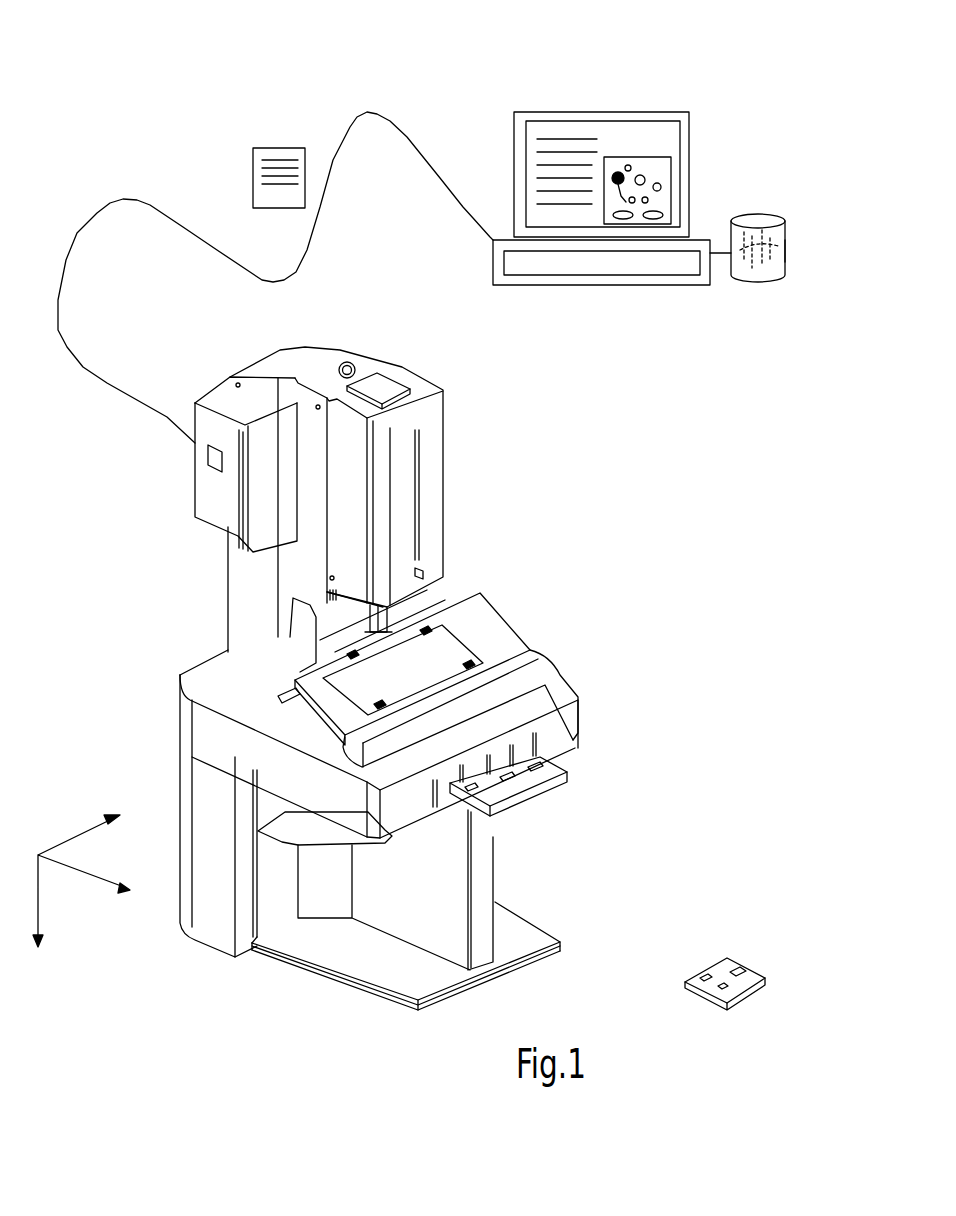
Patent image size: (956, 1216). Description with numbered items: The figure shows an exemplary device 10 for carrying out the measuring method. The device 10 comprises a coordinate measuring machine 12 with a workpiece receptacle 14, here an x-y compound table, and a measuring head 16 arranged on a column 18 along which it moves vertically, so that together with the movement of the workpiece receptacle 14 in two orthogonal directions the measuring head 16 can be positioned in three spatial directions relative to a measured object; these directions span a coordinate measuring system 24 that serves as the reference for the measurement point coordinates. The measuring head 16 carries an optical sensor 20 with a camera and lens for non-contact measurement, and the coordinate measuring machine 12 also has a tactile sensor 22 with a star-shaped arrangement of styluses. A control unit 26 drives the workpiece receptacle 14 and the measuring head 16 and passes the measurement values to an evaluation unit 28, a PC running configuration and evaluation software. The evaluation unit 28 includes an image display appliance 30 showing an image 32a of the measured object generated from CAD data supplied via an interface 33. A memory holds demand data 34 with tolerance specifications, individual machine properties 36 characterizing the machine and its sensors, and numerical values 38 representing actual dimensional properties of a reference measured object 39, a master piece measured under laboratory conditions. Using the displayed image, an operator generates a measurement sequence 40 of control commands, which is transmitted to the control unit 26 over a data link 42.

The device 10 is at (175, 162).
The coordinate measuring machine 12 is at (187, 783).
The workpiece receptacle 14 is at (490, 647).
The measuring head 16 is at (433, 597).
The column 18 is at (245, 603).
The optical sensor 20 is at (457, 643).
The tactile sensor 22 is at (303, 633).
The coordinate measuring system 24 is at (40, 892).
The control unit 26 is at (195, 493).
The evaluation unit 28 is at (564, 285).
The image display appliance 30 is at (570, 112).
The image 32a is at (660, 172).
The interface 33 is at (662, 260).
The demand data 34 is at (742, 258).
The individual machine properties 36 is at (757, 268).
The numerical values 38 is at (786, 243).
The reference measured object 39 is at (746, 966).
The measurement sequence 40 is at (280, 148).
The data link 42 is at (313, 250).